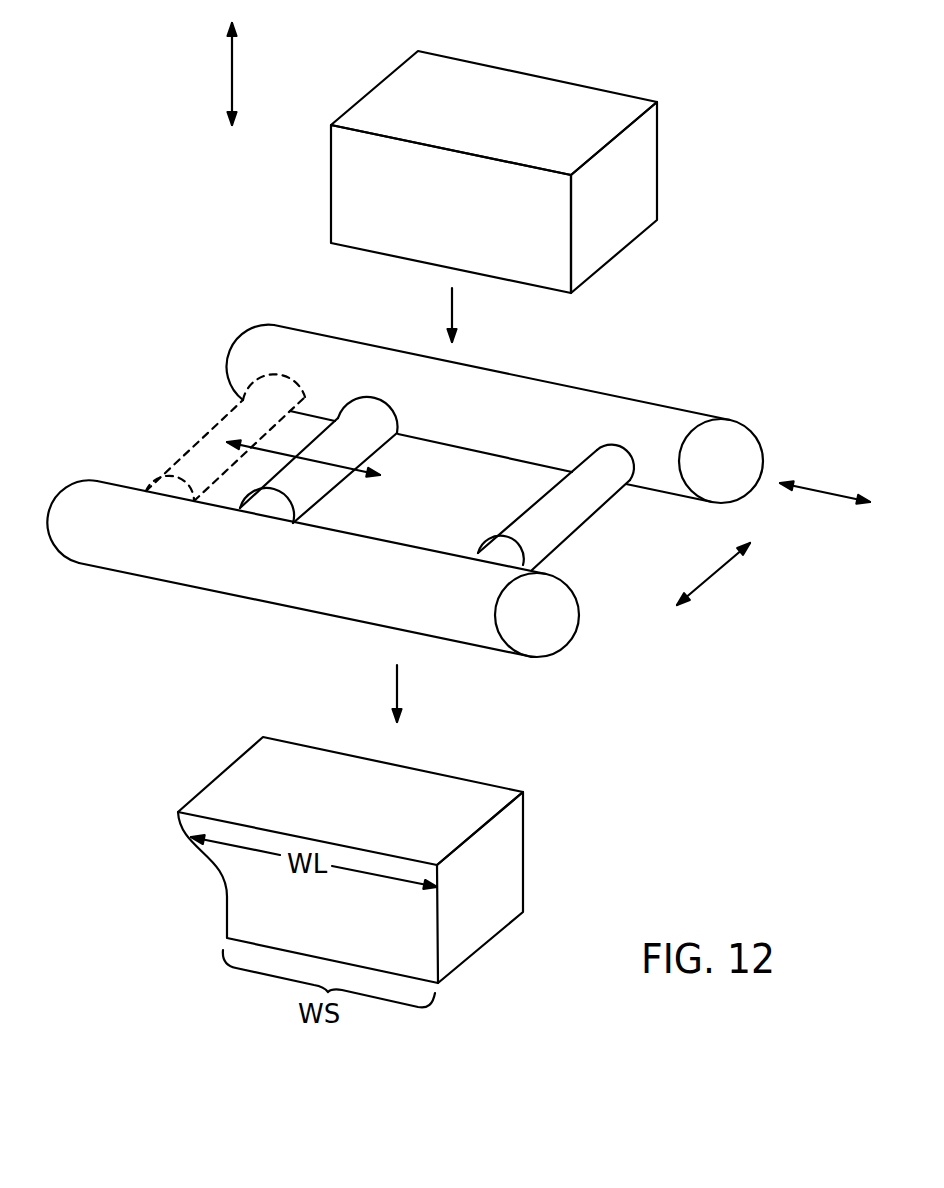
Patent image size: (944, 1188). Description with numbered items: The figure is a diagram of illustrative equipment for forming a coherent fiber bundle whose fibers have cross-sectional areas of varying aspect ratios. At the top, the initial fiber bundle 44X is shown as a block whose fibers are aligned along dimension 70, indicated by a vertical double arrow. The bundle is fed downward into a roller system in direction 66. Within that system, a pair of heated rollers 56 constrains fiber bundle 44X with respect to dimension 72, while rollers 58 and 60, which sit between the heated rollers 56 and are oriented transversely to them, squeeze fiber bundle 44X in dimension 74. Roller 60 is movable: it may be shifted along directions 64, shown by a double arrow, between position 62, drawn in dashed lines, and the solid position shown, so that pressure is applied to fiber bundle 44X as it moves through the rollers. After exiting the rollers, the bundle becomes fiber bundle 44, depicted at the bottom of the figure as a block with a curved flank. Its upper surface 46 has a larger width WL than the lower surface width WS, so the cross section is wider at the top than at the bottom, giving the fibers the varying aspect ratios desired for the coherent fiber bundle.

The fiber bundle 44X is at (642, 170).
The fiber bundle 44 is at (389, 859).
The upper surface 46 is at (432, 788).
The heated rollers 56 is at (655, 412).
The roller 58 is at (580, 508).
The roller 60 is at (320, 485).
The position 62 is at (223, 415).
The directions 64 is at (288, 452).
The direction 66 is at (453, 312).
The dimension 70 is at (233, 70).
The dimension 72 is at (717, 575).
The dimension 74 is at (825, 488).